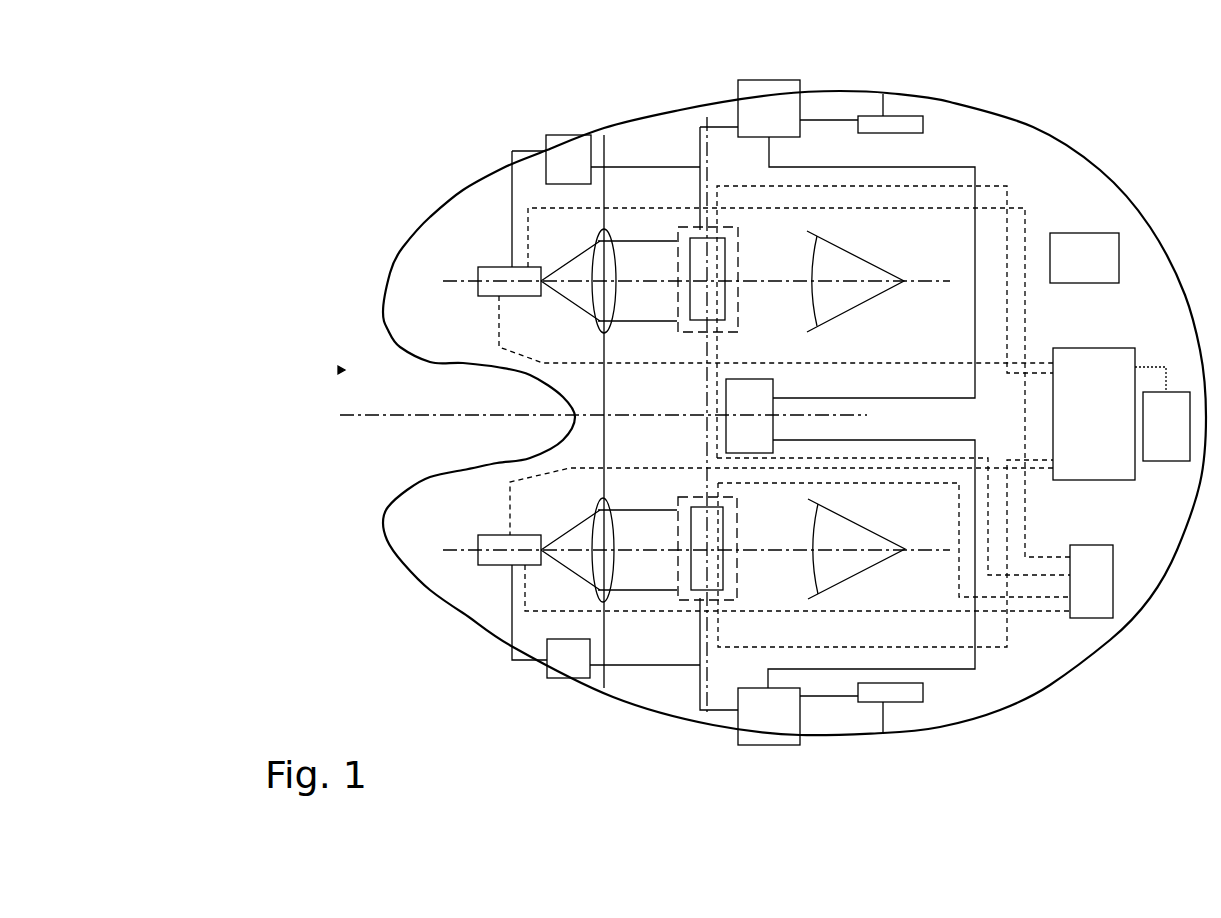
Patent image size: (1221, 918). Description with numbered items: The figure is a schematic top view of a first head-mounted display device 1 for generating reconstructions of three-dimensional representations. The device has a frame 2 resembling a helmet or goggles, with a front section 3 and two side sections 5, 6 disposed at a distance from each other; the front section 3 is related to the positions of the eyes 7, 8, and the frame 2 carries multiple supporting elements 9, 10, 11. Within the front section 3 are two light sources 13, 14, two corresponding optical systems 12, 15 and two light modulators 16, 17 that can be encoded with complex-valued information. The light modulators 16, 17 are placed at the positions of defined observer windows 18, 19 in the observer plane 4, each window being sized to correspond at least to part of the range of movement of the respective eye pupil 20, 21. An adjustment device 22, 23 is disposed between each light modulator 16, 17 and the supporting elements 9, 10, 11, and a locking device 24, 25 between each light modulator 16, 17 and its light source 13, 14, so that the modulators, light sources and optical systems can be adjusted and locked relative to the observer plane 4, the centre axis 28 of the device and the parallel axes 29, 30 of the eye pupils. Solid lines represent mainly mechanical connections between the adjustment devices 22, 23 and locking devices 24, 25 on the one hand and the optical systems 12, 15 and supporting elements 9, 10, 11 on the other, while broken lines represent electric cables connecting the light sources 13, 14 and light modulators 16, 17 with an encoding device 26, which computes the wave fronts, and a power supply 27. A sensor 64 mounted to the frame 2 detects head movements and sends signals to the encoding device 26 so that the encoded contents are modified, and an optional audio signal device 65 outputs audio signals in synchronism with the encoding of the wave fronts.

The head-mounted display device 1 is at (373, 170).
The frame 2 is at (422, 580).
The front section 3 is at (316, 371).
The observer plane 4 is at (707, 375).
The side section 5 is at (838, 747).
The side section 6 is at (842, 82).
The eye 7 is at (848, 247).
The eye 8 is at (848, 515).
The supporting element 9 is at (768, 388).
The supporting element 10 is at (900, 134).
The supporting element 11 is at (925, 697).
The optical system 12 is at (598, 322).
The light source 13 is at (513, 297).
The light source 14 is at (500, 533).
The optical system 15 is at (597, 512).
The light modulator 16 is at (727, 233).
The light modulator 17 is at (688, 598).
The observer window 18 is at (678, 323).
The observer window 19 is at (678, 500).
The eye pupil 20 is at (810, 288).
The eye pupil 21 is at (812, 557).
The adjustment device 22 is at (769, 108).
The adjustment device 23 is at (769, 716).
The locking device 24 is at (568, 159).
The locking device 25 is at (568, 658).
The encoding device 26 is at (1094, 414).
The power supply 27 is at (1091, 581).
The centre axis 28 is at (843, 414).
The axis of the eye pupil 29 is at (943, 281).
The axis of the eye pupil 30 is at (913, 552).
The sensor 64 is at (1162, 414).
The audio signal device 65 is at (1084, 258).